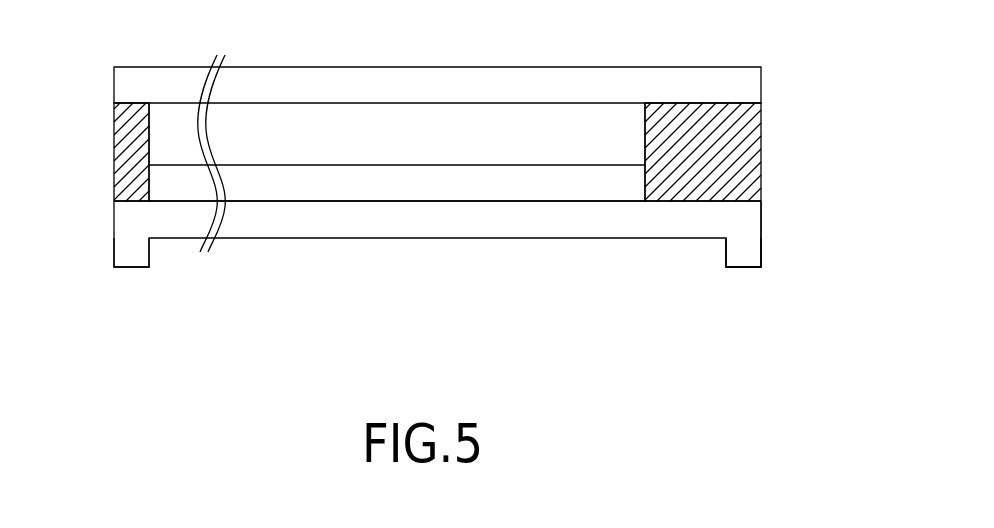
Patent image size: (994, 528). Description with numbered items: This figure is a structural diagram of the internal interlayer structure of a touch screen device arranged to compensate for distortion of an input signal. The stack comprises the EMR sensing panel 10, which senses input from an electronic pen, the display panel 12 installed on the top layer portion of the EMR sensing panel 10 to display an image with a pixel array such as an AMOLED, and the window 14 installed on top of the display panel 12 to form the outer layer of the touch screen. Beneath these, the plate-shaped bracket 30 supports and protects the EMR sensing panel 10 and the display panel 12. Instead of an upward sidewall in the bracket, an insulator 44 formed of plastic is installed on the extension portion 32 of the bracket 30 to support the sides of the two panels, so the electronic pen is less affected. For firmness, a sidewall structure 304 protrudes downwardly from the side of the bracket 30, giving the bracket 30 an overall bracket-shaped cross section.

The EMR sensing panel 10 is at (563, 187).
The display panel 12 is at (508, 128).
The window 14 is at (122, 88).
The bracket 30 is at (458, 222).
The extension portion 32 is at (749, 221).
The insulator 44 is at (122, 152).
The sidewall structure 304 is at (135, 255).